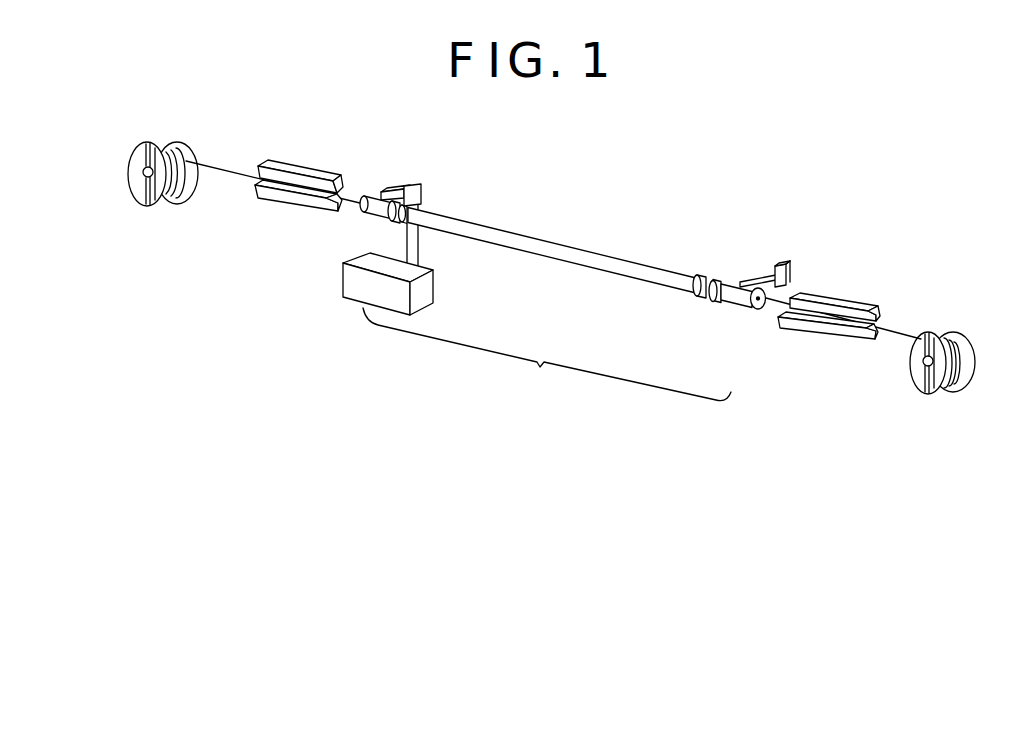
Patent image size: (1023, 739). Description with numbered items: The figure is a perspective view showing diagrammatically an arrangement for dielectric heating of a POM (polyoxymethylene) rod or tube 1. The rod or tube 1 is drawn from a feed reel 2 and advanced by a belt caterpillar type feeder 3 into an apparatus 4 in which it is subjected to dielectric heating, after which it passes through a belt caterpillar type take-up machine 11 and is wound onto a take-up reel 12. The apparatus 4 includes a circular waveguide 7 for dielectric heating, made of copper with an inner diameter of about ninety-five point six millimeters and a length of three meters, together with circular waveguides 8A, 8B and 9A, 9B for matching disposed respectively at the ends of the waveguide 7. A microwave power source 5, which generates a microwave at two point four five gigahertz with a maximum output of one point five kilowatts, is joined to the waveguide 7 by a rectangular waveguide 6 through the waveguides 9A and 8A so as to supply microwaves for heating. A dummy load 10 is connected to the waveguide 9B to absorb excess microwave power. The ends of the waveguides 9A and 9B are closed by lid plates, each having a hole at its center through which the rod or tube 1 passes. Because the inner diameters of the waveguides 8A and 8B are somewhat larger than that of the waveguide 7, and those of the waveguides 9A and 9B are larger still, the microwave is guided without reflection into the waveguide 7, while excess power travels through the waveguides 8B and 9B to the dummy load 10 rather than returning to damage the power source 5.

The POM rod or tube 1 is at (232, 158).
The feed reel 2 is at (161, 148).
The belt catapillar type feeder 3 is at (295, 200).
The apparatus 4 is at (547, 354).
The microwave power source 5 is at (352, 280).
The rectangular waveguide 6 is at (420, 193).
The circular waveguide 7 is at (587, 262).
The circular waveguide for matching 8A is at (393, 222).
The circular waveguide for matching 8B is at (707, 298).
The circular waveguide for matching 9A is at (374, 214).
The circular waveguide for matching 9B is at (737, 308).
The dummy load 10 is at (766, 272).
The belt catapillar type take-up machine 11 is at (827, 330).
The take-up reel 12 is at (932, 333).